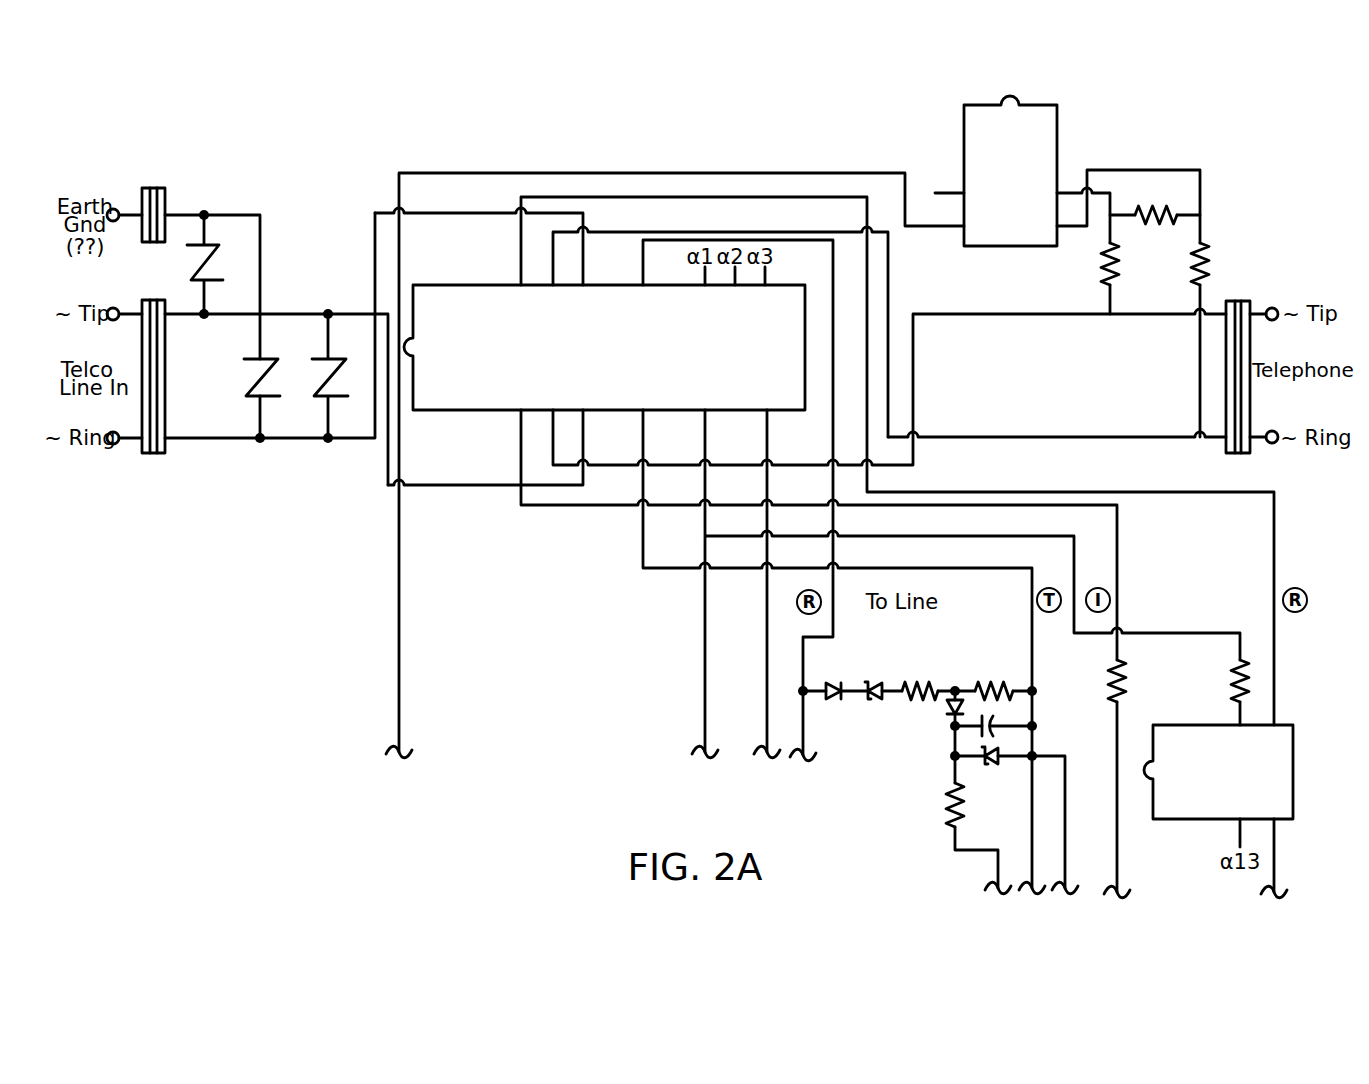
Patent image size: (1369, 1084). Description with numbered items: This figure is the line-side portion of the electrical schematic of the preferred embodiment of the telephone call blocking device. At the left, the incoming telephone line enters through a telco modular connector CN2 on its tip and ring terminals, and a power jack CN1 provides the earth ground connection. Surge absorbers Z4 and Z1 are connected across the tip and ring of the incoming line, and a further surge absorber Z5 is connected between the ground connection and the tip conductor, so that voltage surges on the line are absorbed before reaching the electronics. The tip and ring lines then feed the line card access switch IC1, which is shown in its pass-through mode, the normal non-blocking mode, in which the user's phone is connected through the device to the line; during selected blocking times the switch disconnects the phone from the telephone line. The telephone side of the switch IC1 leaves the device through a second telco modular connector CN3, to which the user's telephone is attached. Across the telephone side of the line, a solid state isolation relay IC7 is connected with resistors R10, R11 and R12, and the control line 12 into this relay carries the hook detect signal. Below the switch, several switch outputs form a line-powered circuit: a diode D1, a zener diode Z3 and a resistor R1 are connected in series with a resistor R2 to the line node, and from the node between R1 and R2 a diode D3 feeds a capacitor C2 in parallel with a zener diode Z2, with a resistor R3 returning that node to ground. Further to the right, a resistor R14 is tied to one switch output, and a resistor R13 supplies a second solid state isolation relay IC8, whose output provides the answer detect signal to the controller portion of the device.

The power jack CN1 is at (154, 233).
The telco modular connector CN2 is at (154, 393).
The telco modular connector CN3 is at (1238, 390).
The surge absorber Z5 is at (218, 264).
The surge absorber Z4 is at (276, 377).
The surge absorber Z1 is at (344, 376).
The line card access switch IC1 is at (604, 347).
The solid state isolation relay IC7 is at (1010, 171).
The hook detect 12 is at (936, 193).
The resistor R10 is at (1155, 203).
The resistor R11 is at (1087, 264).
The resistor R12 is at (1223, 264).
The resistor R13 is at (1218, 681).
The resistor R14 is at (1095, 681).
The solid state isolation relay IC8 is at (1218, 772).
The diode D1 is at (835, 676).
The zener diode Z3 is at (874, 674).
The resistor R1 is at (920, 676).
The resistor R2 is at (994, 676).
The diode D3 is at (934, 715).
The capacitor C2 is at (1003, 717).
The zener diode Z2 is at (987, 769).
The resistor R3 is at (935, 805).